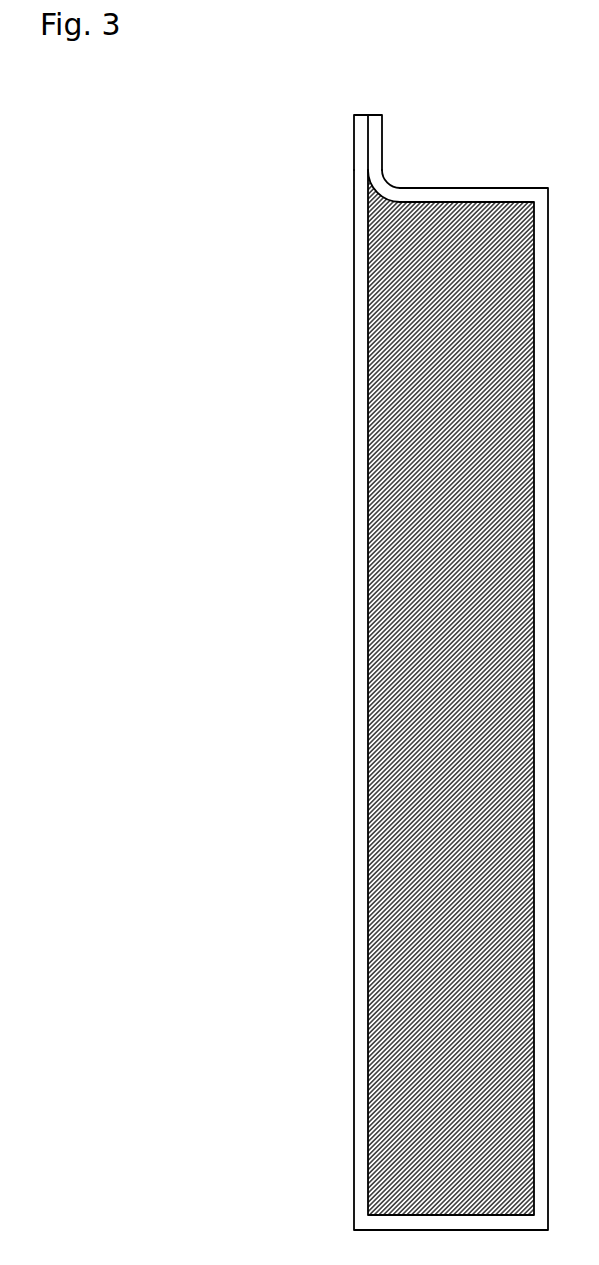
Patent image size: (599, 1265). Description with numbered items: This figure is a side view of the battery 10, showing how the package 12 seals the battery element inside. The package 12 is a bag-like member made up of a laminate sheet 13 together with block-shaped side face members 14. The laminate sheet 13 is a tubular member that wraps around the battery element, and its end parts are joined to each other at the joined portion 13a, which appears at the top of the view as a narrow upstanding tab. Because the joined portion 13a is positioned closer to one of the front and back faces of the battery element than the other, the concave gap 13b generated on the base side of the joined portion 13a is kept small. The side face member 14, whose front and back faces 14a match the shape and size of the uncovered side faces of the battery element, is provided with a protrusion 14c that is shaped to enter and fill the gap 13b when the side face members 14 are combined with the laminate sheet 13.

The battery 10 is at (257, 90).
The package 12 is at (240, 306).
The laminate sheet 13 is at (334, 271).
The joined portion 13a is at (342, 150).
The gap 13b is at (388, 180).
The side face member 14 is at (368, 642).
The front and back faces 14a is at (398, 744).
The protrusion 14c is at (369, 198).